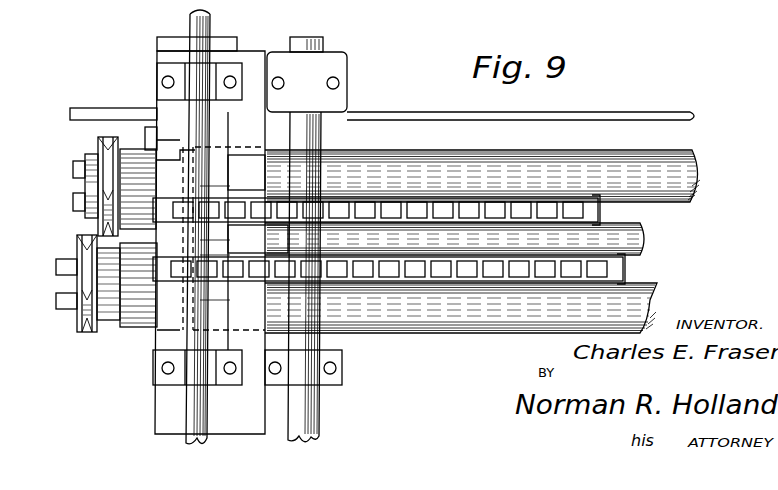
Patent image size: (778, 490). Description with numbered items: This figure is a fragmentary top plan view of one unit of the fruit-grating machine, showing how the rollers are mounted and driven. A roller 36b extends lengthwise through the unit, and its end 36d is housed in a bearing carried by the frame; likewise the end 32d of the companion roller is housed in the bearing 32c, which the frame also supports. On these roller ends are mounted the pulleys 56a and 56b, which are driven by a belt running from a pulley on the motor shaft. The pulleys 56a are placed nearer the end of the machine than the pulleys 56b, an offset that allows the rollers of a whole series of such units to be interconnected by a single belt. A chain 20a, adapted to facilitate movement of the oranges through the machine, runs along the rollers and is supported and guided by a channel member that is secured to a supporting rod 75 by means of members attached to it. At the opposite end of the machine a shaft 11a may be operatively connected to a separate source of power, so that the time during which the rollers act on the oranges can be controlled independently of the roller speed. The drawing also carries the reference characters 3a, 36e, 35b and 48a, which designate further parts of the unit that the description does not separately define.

The shaft 11a is at (203, 28).
The supporting rod 75 is at (320, 415).
The frame bar 3a is at (670, 96).
The bar 36e is at (133, 148).
The roller 36b is at (677, 175).
The roller 35b is at (655, 280).
The chain 20a is at (432, 290).
The rod 48a is at (215, 185).
The pulley 56a is at (98, 145).
The roller end 36d is at (74, 170).
The pulley 56b is at (78, 238).
The roller end 32d is at (55, 266).
The bearing 32c is at (145, 306).